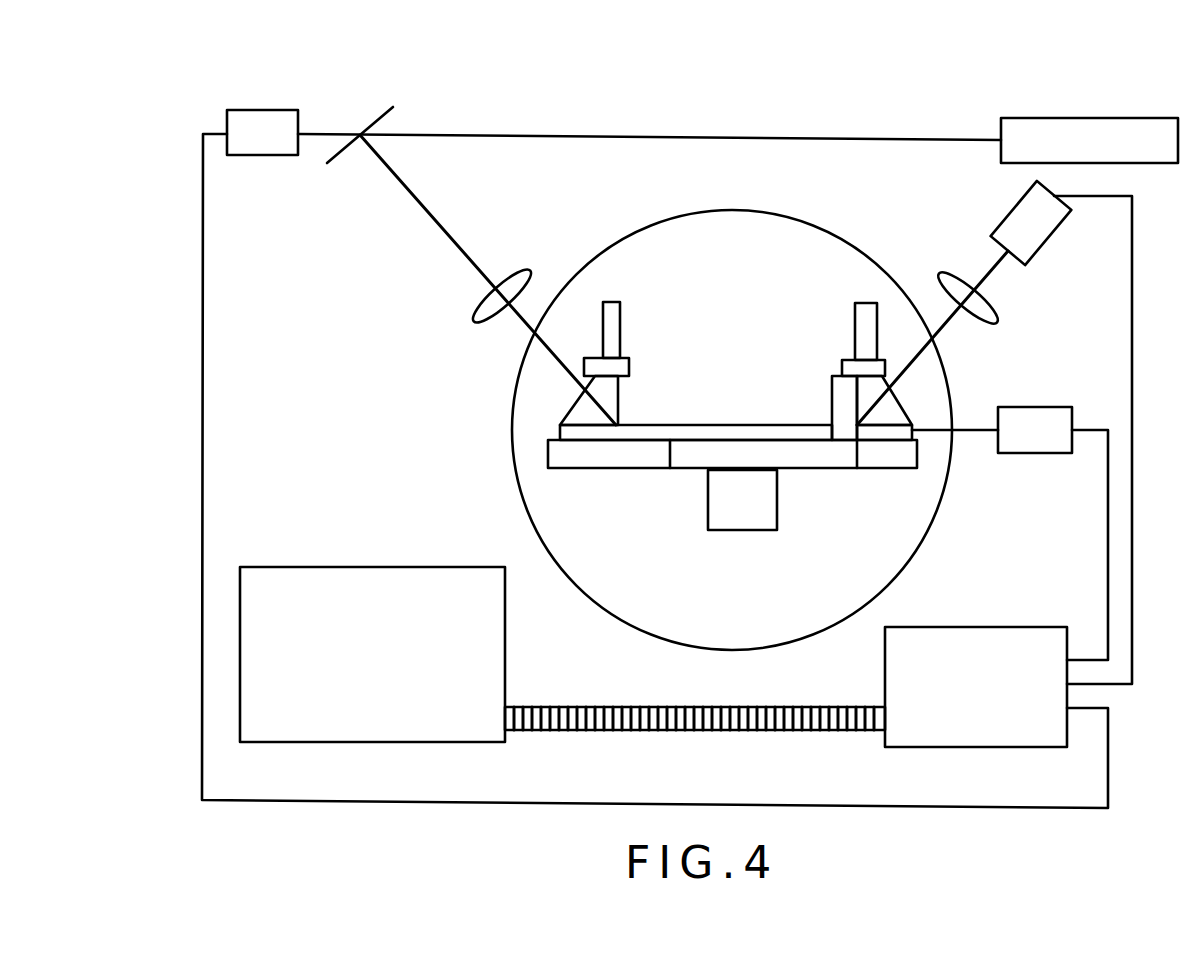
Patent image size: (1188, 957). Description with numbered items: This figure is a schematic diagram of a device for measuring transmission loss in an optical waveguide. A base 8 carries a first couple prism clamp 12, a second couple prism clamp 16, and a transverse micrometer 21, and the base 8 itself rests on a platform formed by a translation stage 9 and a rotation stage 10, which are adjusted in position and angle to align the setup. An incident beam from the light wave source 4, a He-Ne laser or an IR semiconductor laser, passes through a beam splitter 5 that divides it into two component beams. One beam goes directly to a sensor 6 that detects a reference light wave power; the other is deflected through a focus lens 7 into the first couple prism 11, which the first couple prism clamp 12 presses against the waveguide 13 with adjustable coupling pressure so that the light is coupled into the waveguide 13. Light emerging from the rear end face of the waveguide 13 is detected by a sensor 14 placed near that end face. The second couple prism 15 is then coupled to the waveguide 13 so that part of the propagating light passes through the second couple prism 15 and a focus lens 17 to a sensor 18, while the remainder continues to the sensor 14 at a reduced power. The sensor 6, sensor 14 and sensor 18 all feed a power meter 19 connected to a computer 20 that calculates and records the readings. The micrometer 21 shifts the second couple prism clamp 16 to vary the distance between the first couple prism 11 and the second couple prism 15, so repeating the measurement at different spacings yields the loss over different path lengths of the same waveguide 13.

The light wave source 4 is at (1137, 116).
The beam splitter 5 is at (375, 120).
The sensor 6 is at (262, 110).
The focus lens 7 is at (510, 275).
The base 8 is at (600, 460).
The translation stage 9 is at (752, 532).
The rotation stage 10 is at (913, 528).
The first couple prism 11 is at (622, 407).
The first couple prism clamp 12 is at (622, 327).
The waveguide 13 is at (743, 432).
The sensor 14 is at (1043, 407).
The second couple prism 15 is at (885, 418).
The second couple prism clamp 16 is at (860, 335).
The focus lens 17 is at (995, 310).
The sensor 18 is at (1008, 213).
The power meter 19 is at (1020, 627).
The computer 20 is at (505, 668).
The transverse micrometer 21 is at (846, 463).